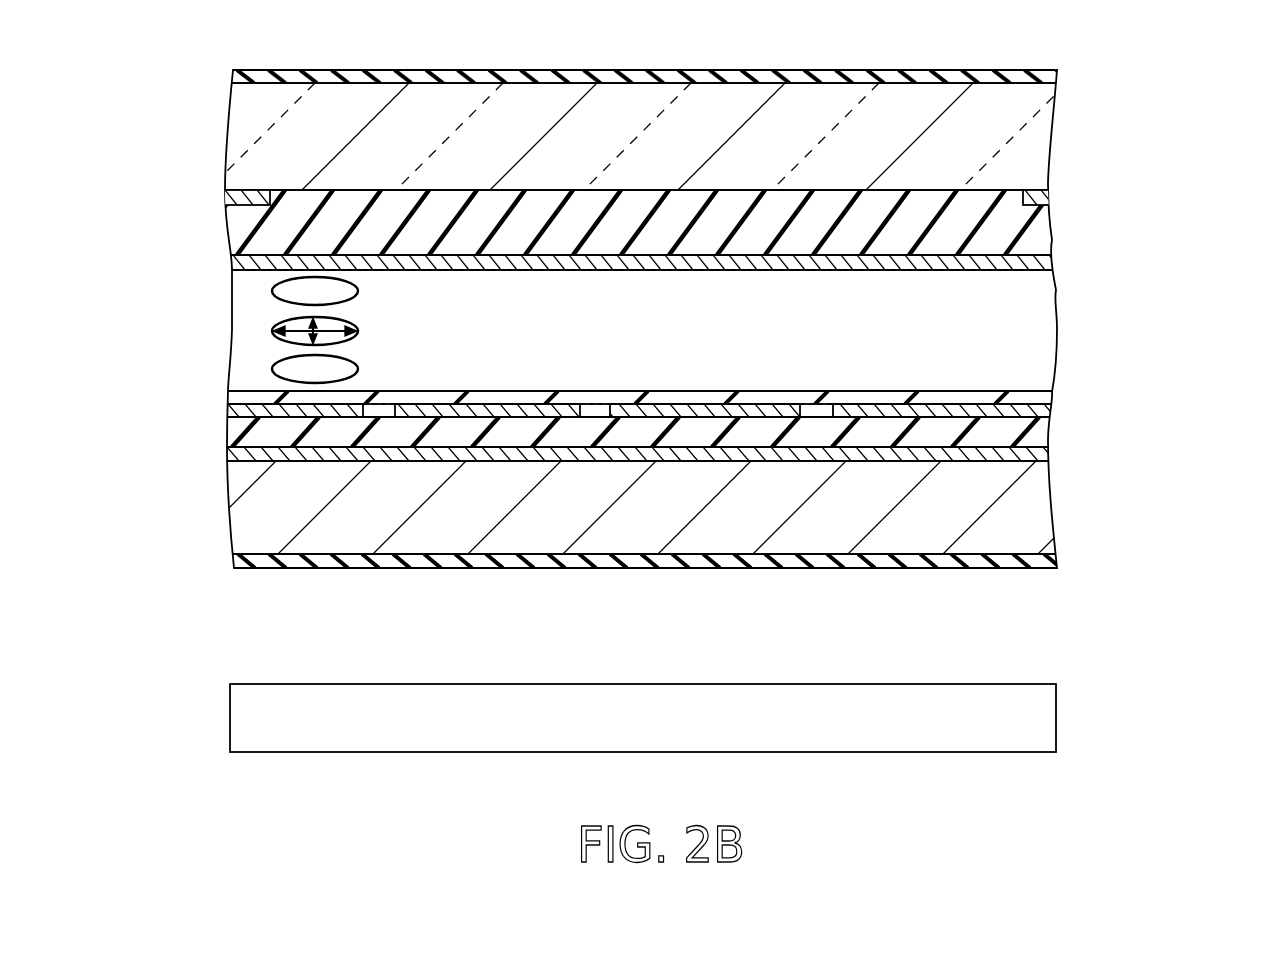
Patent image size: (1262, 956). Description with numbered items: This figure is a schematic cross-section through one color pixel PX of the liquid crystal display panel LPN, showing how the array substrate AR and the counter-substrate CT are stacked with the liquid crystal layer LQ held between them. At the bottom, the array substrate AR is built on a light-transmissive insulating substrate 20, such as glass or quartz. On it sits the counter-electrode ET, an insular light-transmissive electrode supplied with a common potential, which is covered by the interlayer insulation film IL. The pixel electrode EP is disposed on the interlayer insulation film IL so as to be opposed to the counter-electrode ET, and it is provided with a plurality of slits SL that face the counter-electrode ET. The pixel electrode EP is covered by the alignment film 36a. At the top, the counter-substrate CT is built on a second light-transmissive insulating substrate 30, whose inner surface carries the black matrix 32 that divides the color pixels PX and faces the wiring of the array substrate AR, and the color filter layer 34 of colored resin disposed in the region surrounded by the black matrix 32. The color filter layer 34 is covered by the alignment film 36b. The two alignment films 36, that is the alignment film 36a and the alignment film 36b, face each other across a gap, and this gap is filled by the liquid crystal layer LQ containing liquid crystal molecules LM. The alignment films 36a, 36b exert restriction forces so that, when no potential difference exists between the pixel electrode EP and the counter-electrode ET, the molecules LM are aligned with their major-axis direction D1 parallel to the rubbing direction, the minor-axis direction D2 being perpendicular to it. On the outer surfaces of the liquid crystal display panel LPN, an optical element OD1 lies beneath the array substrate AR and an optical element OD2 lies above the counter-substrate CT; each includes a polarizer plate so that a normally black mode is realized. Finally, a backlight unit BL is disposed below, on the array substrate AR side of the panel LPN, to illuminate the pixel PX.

The optical element OD2 is at (233, 76).
The insulating substrate 30 is at (240, 120).
The black matrix 32 is at (232, 197).
The color filter layer 34 is at (236, 226).
The alignment films 36 is at (570, 329).
The alignment film 36b is at (233, 263).
The alignment film 36a is at (597, 376).
The liquid crystal layer LQ is at (1047, 330).
The liquid crystal molecules LM is at (357, 285).
The major-axis direction D1 is at (328, 323).
The minor-axis direction D2 is at (318, 333).
The slits SL is at (390, 398).
The pixel electrode EP is at (237, 408).
The interlayer insulation film IL is at (237, 427).
The counter-electrode ET is at (234, 452).
The insulating substrate 20 is at (245, 518).
The optical element OD1 is at (236, 560).
The counter-substrate CT is at (628, 163).
The array substrate AR is at (629, 454).
The liquid crystal display panel LPN is at (664, 318).
The color pixel PX is at (234, 574).
The backlight unit BL is at (1040, 718).